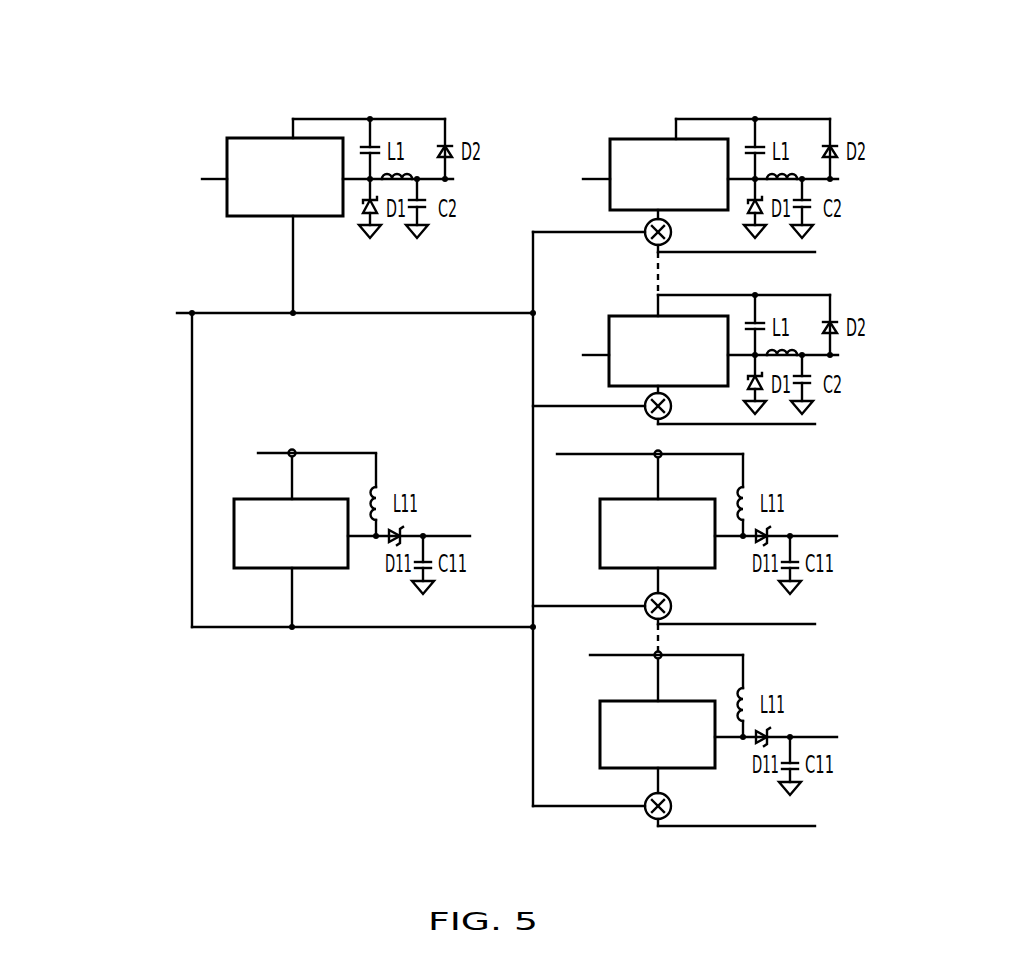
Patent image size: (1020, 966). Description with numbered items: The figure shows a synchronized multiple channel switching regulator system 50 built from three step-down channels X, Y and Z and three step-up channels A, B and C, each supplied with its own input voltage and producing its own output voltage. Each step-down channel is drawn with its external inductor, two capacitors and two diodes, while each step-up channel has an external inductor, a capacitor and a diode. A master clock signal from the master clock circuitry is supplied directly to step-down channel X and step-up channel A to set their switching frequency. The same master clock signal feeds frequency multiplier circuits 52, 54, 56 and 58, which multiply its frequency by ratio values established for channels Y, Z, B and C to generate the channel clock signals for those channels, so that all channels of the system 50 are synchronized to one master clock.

The synchronized multiple channel switching regulator system 50 is at (479, 86).
The frequency multiplier circuit 52 is at (647, 240).
The frequency multiplier circuit 54 is at (647, 413).
The frequency multiplier circuit 56 is at (647, 613).
The frequency multiplier circuit 58 is at (647, 814).